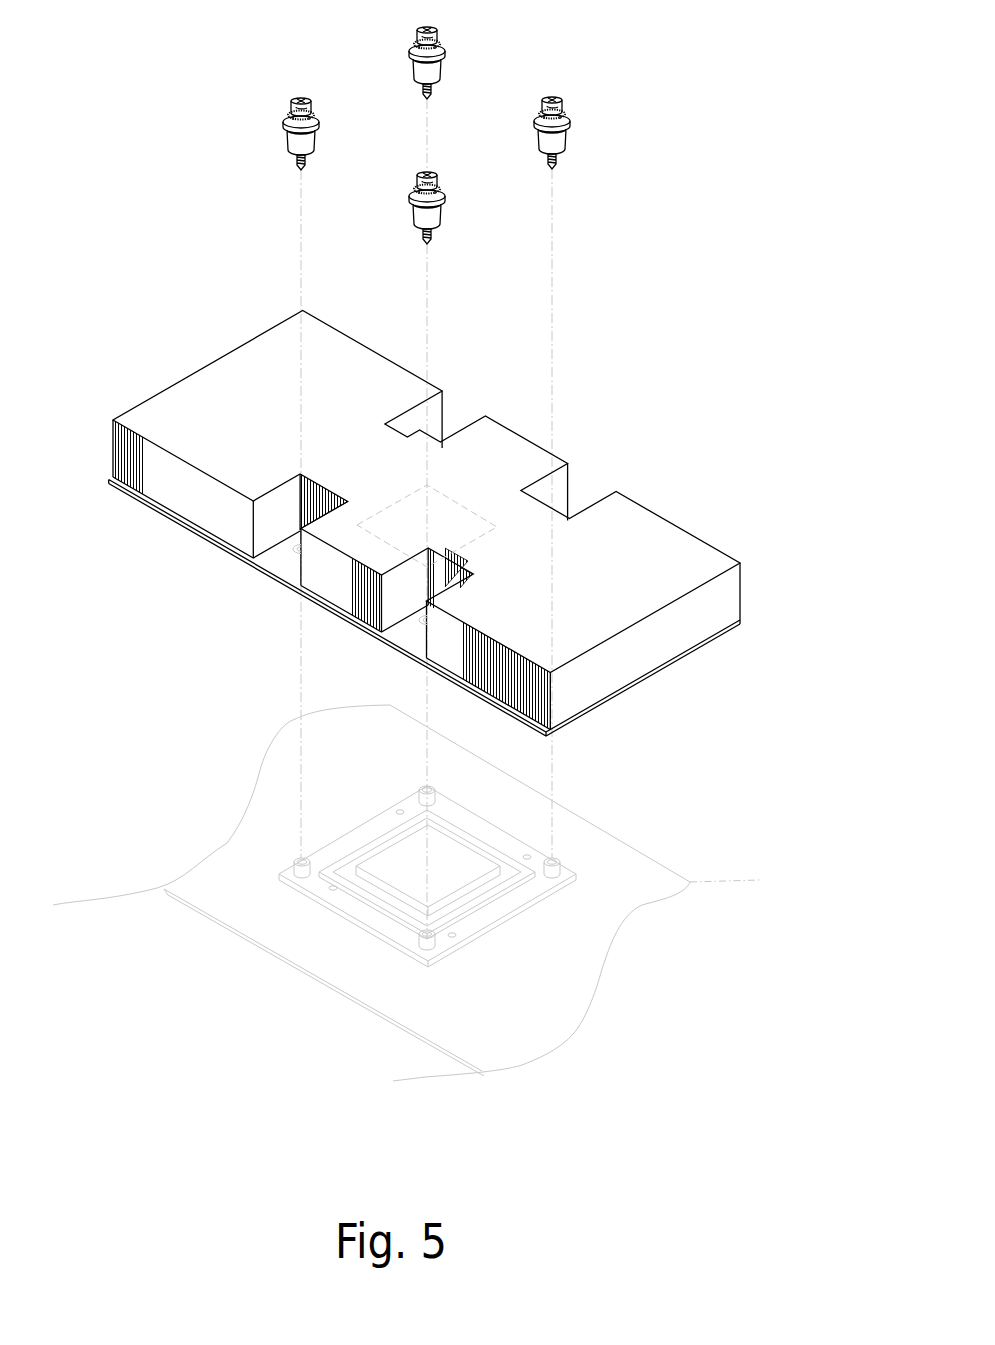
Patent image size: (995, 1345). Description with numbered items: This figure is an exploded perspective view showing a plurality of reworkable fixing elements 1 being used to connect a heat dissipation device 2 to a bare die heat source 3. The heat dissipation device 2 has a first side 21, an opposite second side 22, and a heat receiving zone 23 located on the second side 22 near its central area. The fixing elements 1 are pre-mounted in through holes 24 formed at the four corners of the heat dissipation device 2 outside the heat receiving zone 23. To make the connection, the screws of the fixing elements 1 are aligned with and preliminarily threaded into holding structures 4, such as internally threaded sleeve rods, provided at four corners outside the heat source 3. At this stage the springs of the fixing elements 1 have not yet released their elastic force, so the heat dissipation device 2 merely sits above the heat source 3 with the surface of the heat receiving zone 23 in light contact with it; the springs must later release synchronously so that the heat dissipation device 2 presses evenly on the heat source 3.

The fixing element 1 is at (258, 90).
The heat dissipation device 2 is at (178, 331).
The first side 21 is at (283, 565).
The second side 22 is at (284, 576).
The heat receiving zone 23 is at (460, 525).
The through holes 24 is at (287, 553).
The bare die heat source 3 is at (400, 862).
The holding structures 4 is at (280, 863).